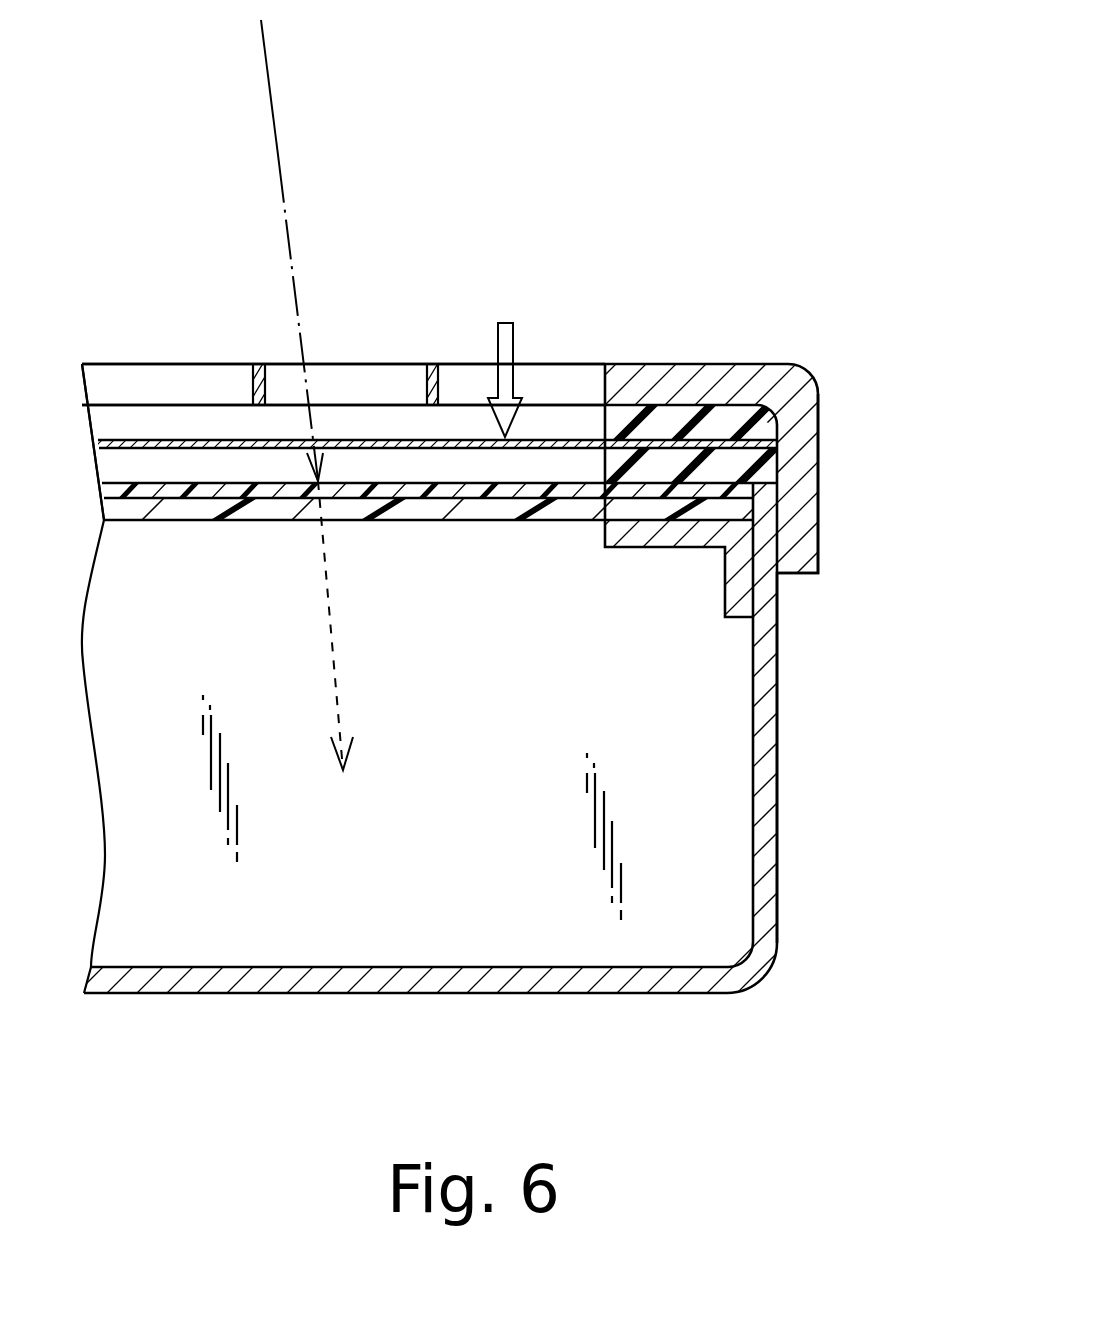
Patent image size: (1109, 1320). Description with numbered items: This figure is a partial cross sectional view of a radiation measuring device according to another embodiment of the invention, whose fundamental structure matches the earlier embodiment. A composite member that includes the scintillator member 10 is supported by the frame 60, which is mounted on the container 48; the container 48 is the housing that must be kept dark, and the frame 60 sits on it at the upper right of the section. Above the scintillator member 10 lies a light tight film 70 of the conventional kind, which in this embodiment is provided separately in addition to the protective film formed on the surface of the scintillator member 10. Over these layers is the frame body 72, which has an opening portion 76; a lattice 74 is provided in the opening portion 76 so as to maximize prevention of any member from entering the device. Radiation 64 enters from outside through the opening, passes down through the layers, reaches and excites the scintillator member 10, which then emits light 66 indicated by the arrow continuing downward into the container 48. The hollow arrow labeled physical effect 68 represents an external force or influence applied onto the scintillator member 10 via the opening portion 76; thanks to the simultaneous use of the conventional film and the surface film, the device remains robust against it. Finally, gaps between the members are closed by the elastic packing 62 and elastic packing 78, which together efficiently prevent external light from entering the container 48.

The scintillator member 10 is at (363, 487).
The container 48 is at (778, 743).
The frame 60 is at (673, 548).
The packing 62 is at (600, 460).
The radiation 64 is at (275, 138).
The emitted light 66 is at (335, 668).
The physical effect 68 is at (505, 323).
The light tight film 70 is at (462, 440).
The frame body 72 is at (820, 447).
The lattice 74 is at (253, 378).
The opening portion 76 is at (138, 377).
The elastic packing 78 is at (732, 415).